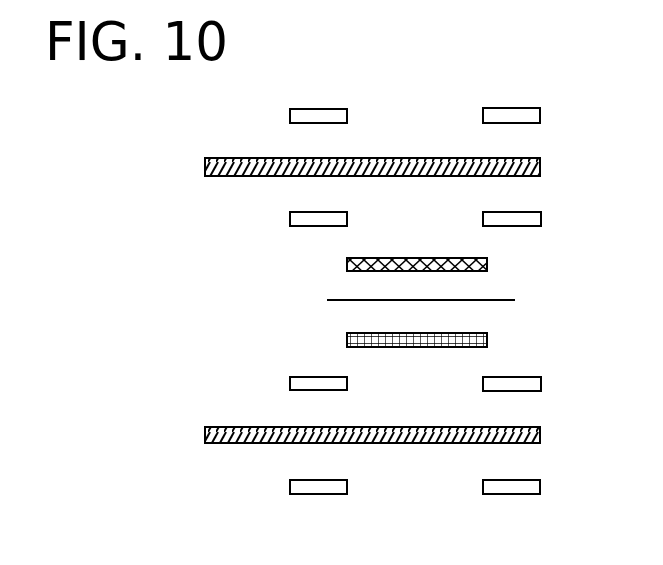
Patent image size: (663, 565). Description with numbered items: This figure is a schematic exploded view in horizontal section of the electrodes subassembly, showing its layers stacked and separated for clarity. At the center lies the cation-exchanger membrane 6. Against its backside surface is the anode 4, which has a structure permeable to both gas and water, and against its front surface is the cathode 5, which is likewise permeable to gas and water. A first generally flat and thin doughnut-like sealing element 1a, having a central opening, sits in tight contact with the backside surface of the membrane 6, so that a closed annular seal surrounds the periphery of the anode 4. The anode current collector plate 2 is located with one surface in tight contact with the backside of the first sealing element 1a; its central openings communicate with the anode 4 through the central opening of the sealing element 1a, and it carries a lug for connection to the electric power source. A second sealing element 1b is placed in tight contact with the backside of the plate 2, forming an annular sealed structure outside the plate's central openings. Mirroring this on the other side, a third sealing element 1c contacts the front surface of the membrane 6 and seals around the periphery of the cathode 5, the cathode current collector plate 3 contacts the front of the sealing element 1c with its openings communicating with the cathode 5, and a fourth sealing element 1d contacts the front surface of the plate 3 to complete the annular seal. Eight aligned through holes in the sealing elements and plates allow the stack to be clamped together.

The first sealing element 1a is at (303, 212).
The second sealing element 1b is at (303, 109).
The third sealing element 1c is at (303, 377).
The fourth sealing element 1d is at (303, 480).
The anode current collector plate 2 is at (413, 158).
The cathode current collector plate 3 is at (423, 443).
The anode 4 is at (415, 258).
The cathode 5 is at (412, 348).
The cation-exchanger membrane 6 is at (358, 300).